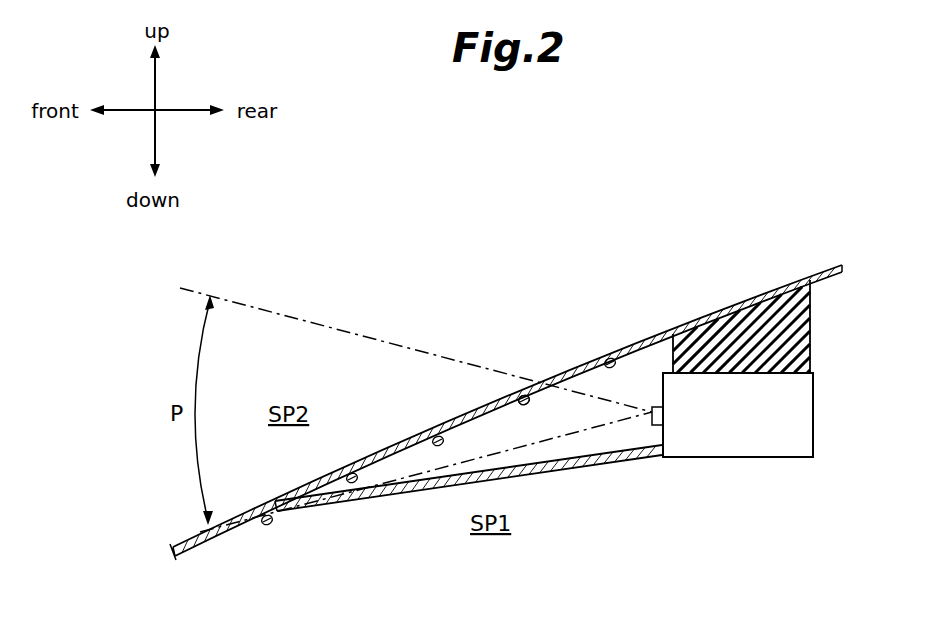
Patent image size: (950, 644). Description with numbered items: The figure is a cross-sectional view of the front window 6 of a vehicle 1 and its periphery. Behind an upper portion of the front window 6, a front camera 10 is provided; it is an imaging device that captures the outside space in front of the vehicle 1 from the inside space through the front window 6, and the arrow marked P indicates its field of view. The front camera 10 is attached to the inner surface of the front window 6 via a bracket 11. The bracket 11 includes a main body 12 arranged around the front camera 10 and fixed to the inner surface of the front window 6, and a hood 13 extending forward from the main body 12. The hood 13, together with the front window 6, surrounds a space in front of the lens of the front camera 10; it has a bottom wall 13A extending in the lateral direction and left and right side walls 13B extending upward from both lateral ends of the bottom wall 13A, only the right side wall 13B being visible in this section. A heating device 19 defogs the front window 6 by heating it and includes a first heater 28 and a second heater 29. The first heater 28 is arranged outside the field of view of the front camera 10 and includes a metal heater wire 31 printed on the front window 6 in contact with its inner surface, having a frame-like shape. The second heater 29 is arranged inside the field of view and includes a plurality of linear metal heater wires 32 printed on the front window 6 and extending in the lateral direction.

The vehicle 1 is at (783, 234).
The front window 6 is at (621, 334).
The front camera 10 is at (813, 437).
The bracket 11 is at (816, 324).
The main body 12 is at (810, 352).
The hood 13 is at (548, 468).
The bottom wall 13A is at (382, 506).
The side wall 13B is at (643, 357).
The heating device 19 is at (613, 362).
The first heater 28 is at (260, 523).
The second heater 29 is at (531, 403).
The heater wire 31 is at (270, 526).
The heater wires 32 is at (525, 394).